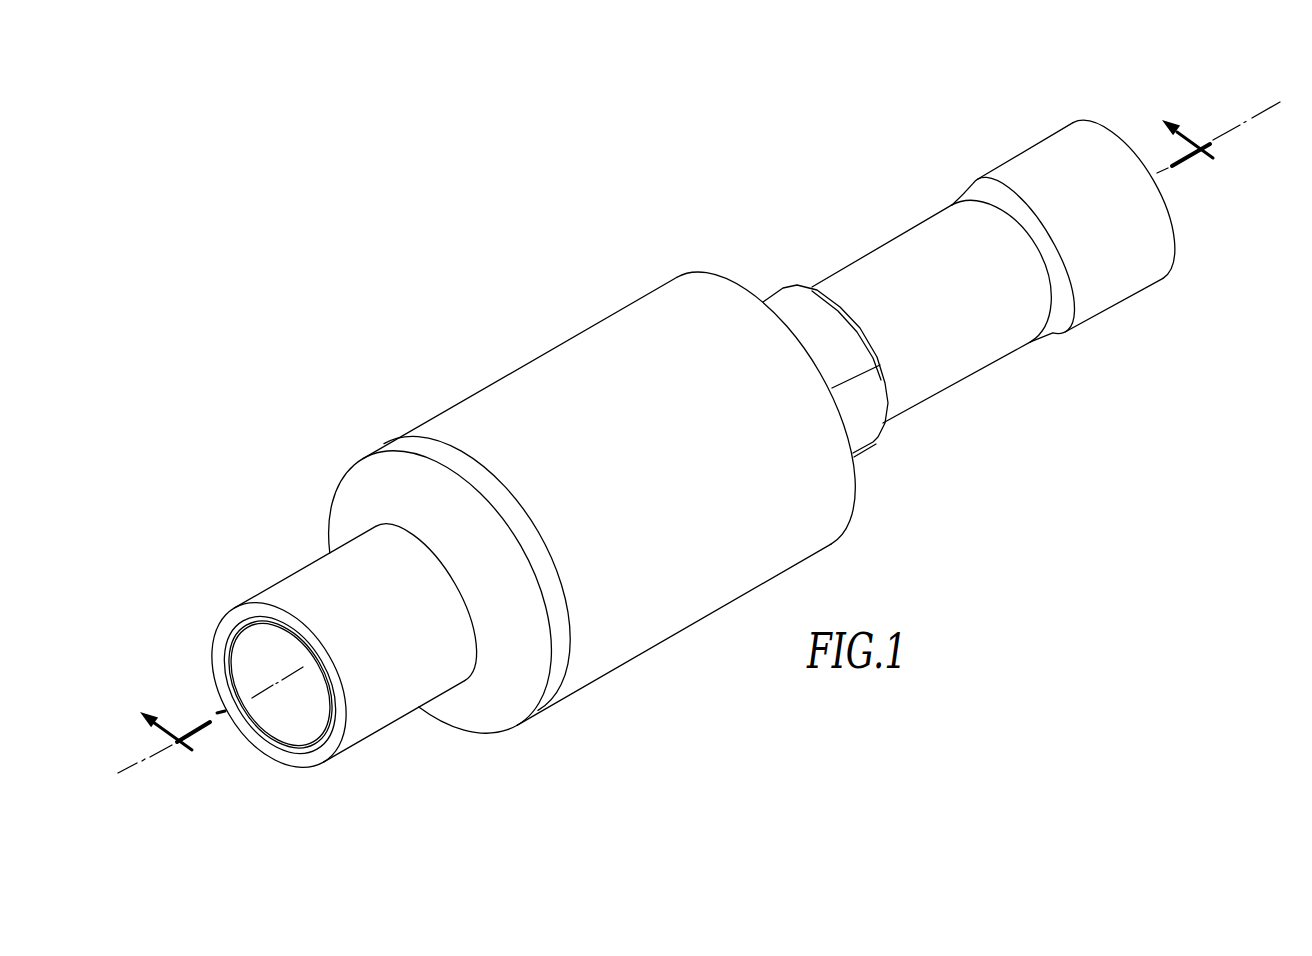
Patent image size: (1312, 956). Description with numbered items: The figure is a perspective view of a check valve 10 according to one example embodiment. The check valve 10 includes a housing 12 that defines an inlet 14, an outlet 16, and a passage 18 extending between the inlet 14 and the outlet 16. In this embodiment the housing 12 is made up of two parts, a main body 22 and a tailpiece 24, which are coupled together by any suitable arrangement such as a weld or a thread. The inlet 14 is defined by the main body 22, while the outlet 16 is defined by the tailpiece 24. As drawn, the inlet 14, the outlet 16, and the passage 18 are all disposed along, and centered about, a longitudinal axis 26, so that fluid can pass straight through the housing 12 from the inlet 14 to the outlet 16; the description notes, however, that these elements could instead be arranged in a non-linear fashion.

The check valve 10 is at (495, 265).
The housing 12 is at (625, 273).
The inlet 14 is at (1200, 238).
The outlet 16 is at (185, 668).
The passage 18 is at (292, 725).
The main body 22 is at (686, 292).
The tailpiece 24 is at (320, 573).
The longitudinal axis 26 is at (1260, 112).